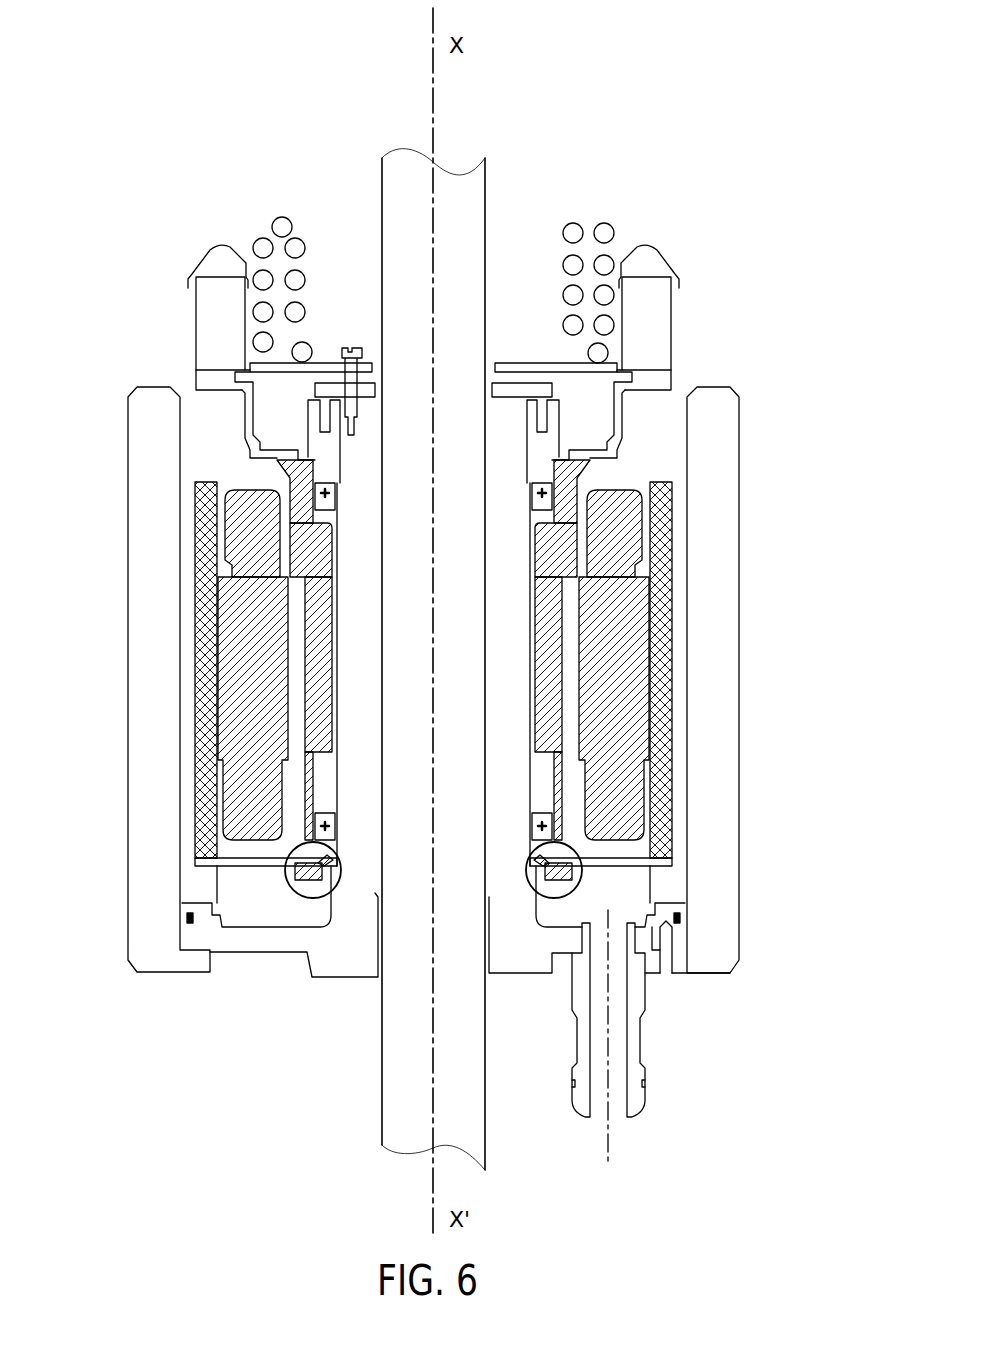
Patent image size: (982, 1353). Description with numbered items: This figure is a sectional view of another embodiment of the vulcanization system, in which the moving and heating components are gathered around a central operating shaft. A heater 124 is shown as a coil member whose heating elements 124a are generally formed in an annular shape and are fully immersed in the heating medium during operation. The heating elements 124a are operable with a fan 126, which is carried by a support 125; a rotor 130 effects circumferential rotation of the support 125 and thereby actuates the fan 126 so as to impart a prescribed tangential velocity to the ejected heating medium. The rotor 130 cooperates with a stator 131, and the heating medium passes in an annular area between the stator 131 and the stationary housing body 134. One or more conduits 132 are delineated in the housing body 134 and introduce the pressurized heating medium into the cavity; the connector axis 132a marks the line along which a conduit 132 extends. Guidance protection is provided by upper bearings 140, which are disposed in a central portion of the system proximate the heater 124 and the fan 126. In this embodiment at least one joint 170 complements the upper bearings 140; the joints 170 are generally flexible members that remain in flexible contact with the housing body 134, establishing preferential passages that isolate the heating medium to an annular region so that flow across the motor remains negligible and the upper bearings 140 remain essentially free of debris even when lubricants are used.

The heater 124 is at (604, 233).
The heating elements 124a is at (295, 280).
The support 125 is at (240, 417).
The fan 126 is at (663, 308).
The rotor 130 is at (553, 622).
The stator 131 is at (632, 708).
The conduits 132 is at (633, 1053).
The connector axis 132a is at (615, 1107).
The housing body 134 is at (718, 821).
The upper bearings 140 is at (548, 491).
The joint 170 is at (583, 876).